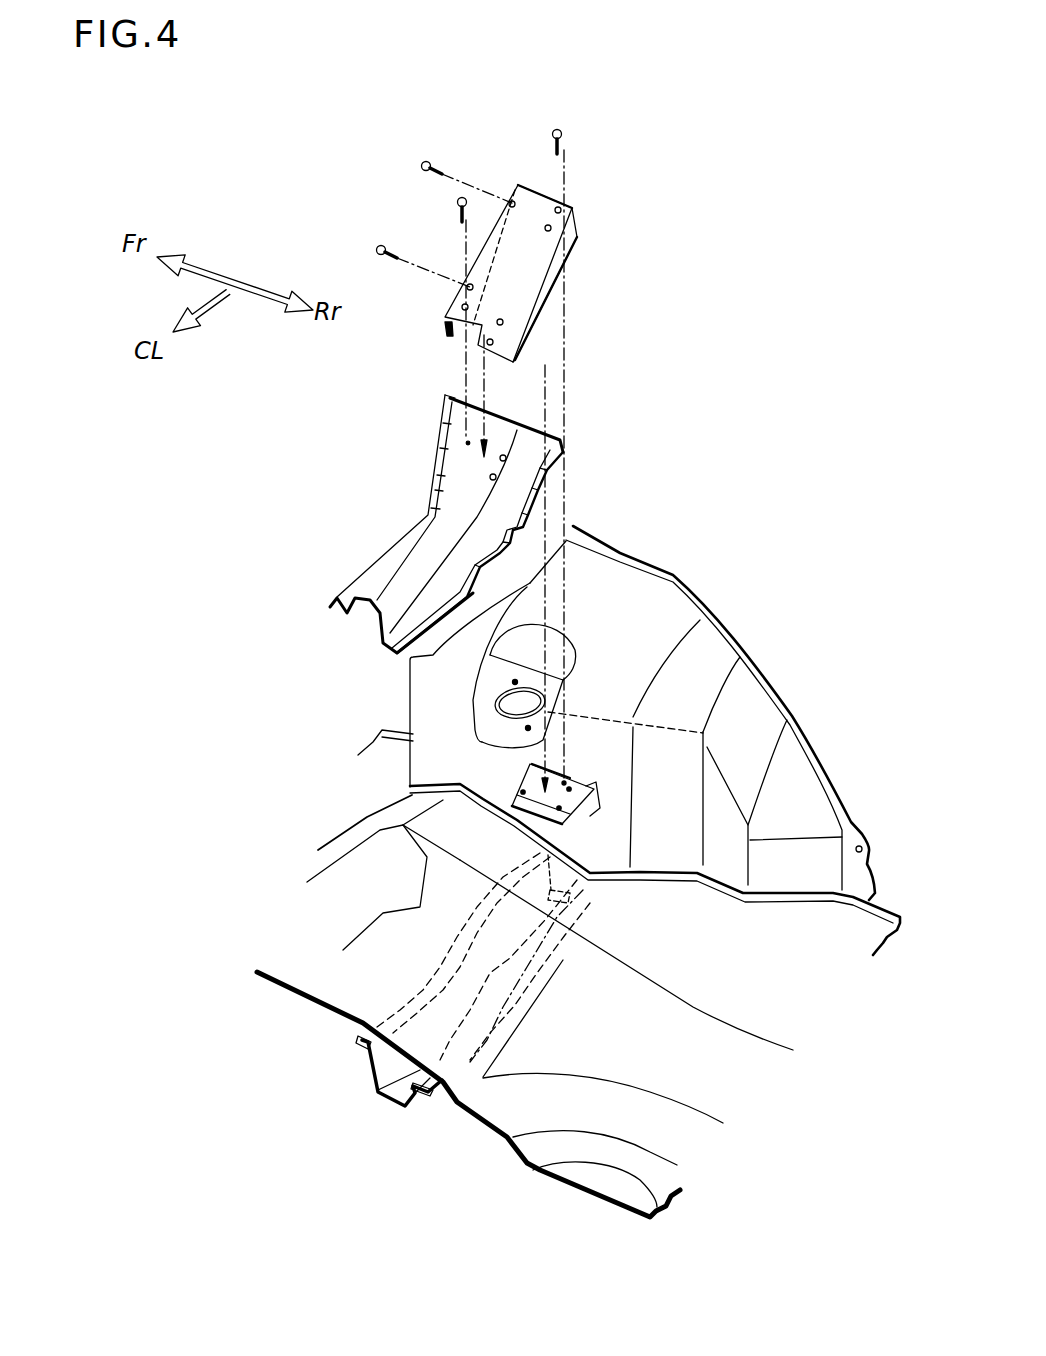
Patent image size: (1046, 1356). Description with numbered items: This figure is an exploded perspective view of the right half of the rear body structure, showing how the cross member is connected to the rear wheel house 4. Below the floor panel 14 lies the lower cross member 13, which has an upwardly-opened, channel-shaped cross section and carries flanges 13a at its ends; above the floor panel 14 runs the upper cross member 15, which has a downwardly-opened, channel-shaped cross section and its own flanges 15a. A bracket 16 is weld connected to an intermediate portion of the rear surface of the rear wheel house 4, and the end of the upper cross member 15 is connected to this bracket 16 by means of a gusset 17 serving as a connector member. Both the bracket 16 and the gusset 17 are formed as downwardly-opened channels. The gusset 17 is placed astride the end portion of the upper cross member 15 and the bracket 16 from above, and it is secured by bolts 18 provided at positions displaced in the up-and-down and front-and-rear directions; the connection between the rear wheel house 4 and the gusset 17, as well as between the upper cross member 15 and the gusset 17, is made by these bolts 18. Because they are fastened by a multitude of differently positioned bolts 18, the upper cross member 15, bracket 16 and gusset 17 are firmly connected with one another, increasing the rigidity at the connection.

The rear wheel house 4 is at (669, 610).
The lower cross member 13 is at (393, 1097).
The flange 13a is at (357, 1047).
The floor panel 14 is at (283, 987).
The upper cross member 15 is at (405, 560).
The flange 15a is at (397, 657).
The bracket 16 is at (576, 806).
The gusset 17 is at (570, 232).
The bolt 18 is at (458, 204).